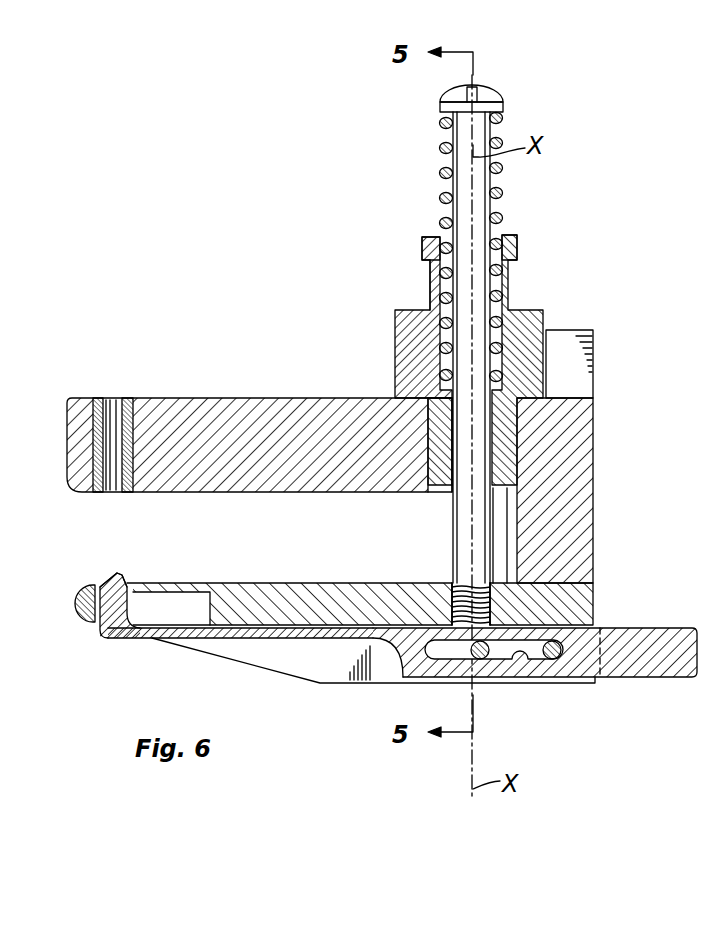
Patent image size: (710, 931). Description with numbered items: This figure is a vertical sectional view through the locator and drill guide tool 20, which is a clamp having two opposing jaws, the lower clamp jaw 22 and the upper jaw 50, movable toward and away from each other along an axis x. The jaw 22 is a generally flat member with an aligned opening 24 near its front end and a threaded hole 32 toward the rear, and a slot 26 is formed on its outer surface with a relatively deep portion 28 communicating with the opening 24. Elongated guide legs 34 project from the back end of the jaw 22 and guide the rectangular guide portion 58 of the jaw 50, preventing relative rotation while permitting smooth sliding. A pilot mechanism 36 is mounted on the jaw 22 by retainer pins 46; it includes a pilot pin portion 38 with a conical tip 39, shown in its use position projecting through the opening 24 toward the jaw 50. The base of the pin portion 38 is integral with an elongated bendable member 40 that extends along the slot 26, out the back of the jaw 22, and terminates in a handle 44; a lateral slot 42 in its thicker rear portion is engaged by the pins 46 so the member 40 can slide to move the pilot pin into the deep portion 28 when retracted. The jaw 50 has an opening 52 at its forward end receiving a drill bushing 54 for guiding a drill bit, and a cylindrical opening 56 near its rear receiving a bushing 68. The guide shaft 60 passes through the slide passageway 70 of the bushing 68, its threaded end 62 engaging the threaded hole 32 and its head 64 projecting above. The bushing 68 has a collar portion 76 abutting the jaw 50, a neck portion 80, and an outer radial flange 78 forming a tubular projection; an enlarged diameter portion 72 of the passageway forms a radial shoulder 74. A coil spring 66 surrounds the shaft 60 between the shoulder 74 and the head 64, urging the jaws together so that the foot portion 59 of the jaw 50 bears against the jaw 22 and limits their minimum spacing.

The locator and drill guide tool 20 is at (283, 276).
The clamp jaw 22 is at (297, 583).
The opening 24 is at (103, 588).
The slot 26 is at (300, 657).
The relatively deep portion 28 is at (170, 608).
The threaded hole 32 is at (490, 613).
The guide legs 34 is at (595, 355).
The pilot mechanism 36 is at (250, 645).
The pilot pin portion 38 is at (112, 628).
The conical tip 39 is at (115, 573).
The elongated bendable member 40 is at (367, 683).
The slot 42 is at (522, 662).
The handle 44 is at (697, 676).
The retainer pins 46 is at (561, 650).
The jaw 50 is at (205, 398).
The opening 52 is at (113, 415).
The drill bushing 54 is at (130, 400).
The cylindrical opening 56 is at (432, 423).
The rectangular guide portion 58 is at (595, 453).
The foot portion 59 is at (594, 564).
The guide shaft 60 is at (452, 188).
The threaded end 62 is at (422, 597).
The head 64 is at (448, 93).
The coil spring 66 is at (440, 147).
The bushing 68 is at (531, 309).
The slide passageway 70 is at (460, 470).
The enlarged diameter portion 72 is at (422, 238).
The radial shoulder 74 is at (442, 376).
The collar portion 76 is at (396, 353).
The outer radial flange 78 is at (517, 243).
The neck portion 80 is at (430, 283).